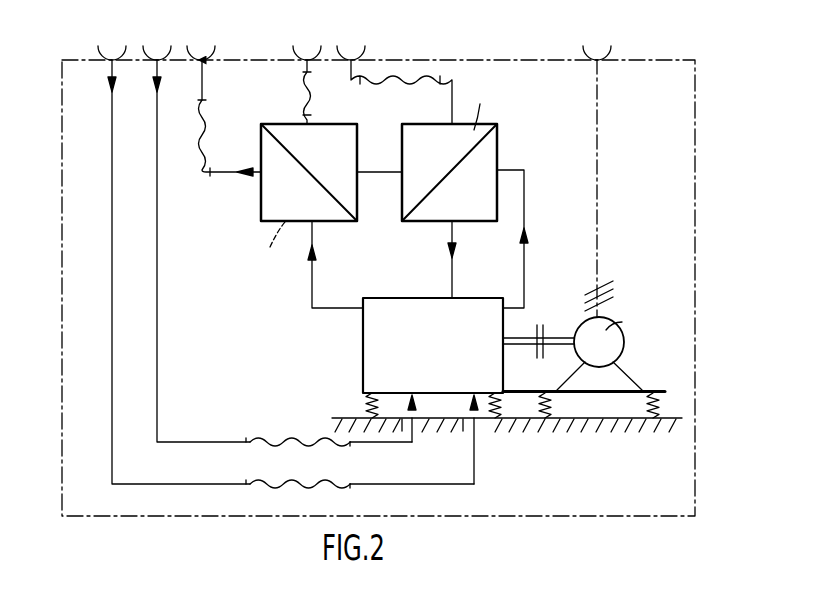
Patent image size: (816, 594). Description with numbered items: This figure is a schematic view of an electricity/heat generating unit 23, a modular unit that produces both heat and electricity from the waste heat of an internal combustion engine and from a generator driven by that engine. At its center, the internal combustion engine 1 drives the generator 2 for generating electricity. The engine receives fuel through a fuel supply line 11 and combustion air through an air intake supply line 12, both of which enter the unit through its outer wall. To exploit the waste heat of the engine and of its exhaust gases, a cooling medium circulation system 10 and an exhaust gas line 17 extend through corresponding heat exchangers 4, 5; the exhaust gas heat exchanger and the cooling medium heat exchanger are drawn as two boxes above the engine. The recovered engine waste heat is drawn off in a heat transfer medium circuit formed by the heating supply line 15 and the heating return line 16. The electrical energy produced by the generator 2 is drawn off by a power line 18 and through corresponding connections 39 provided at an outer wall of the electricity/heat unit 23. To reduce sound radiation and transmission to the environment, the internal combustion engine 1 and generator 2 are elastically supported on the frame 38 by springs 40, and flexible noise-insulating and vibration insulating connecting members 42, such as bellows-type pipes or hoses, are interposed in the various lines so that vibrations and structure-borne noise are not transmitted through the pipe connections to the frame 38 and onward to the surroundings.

The internal combustion engine 1 is at (413, 297).
The generator 2 is at (625, 343).
The heat exchanger 4 is at (354, 158).
The heat exchanger 5 is at (494, 158).
The cooling medium circulation system 10 is at (524, 264).
The fuel supply line 11 is at (158, 206).
The air intake supply line 12 is at (112, 259).
The heating supply line 15 is at (304, 72).
The heating return line 16 is at (352, 74).
The exhaust gas line 17 is at (207, 100).
The power line 18 is at (598, 147).
The electricity/heat generating unit 23 is at (479, 52).
The frame 38 is at (350, 420).
The connections 39 is at (191, 46).
The springs 40 is at (510, 404).
The flexible noise-insulating and vibration insulating connecting member 42 is at (312, 88).